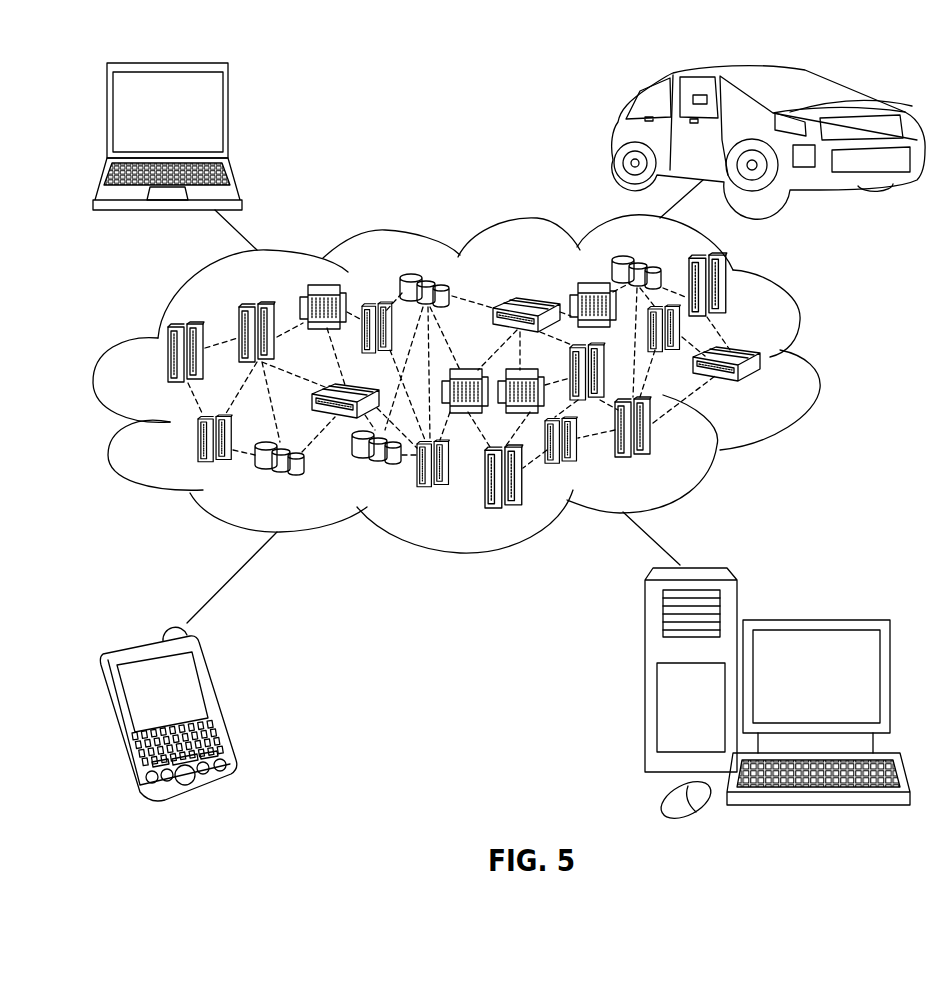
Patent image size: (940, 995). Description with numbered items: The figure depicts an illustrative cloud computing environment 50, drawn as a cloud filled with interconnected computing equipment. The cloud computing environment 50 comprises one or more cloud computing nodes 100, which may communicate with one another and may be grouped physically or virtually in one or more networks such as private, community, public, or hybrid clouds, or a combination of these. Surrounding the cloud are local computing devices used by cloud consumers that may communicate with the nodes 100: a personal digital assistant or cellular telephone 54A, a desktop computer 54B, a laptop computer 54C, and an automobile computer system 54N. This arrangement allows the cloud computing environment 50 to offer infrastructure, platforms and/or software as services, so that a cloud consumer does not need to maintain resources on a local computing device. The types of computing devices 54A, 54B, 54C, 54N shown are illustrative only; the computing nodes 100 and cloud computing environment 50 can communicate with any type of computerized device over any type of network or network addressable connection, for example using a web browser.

The cloud computing environment 50 is at (817, 362).
The personal digital assistant (PDA) or cellular telephone 54A is at (222, 701).
The desktop computer 54B is at (813, 618).
The laptop computer 54C is at (228, 118).
The automobile computer system 54N is at (618, 133).
The cloud computing nodes 100 is at (762, 389).